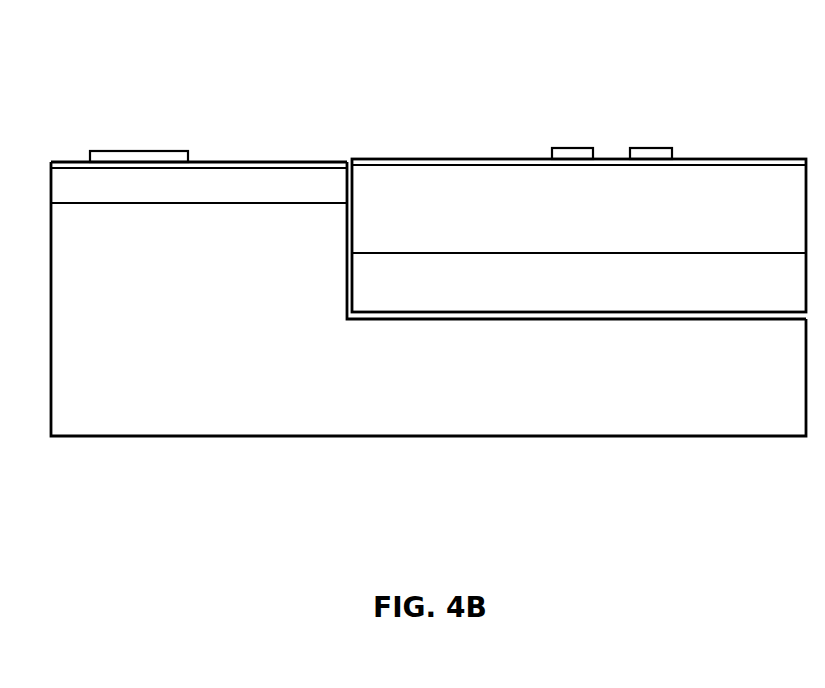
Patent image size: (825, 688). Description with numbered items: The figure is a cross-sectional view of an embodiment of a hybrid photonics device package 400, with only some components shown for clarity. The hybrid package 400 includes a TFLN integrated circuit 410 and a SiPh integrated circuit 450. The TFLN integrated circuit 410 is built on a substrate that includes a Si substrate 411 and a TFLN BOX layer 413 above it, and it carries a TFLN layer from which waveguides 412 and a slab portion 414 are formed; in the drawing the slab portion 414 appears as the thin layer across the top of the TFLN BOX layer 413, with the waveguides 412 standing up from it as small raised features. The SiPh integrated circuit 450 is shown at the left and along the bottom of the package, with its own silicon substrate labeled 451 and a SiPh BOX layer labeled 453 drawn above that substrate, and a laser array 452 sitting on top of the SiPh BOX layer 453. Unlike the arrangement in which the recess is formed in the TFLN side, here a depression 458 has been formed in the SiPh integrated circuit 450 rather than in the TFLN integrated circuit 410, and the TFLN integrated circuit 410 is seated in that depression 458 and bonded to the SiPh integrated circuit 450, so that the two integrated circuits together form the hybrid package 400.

The hybrid photonics device package 400 is at (164, 60).
The TFLN integrated circuit 410 is at (686, 110).
The Si substrate 411 is at (708, 297).
The waveguides 412 is at (582, 132).
The TFLN BOX layer 413 is at (586, 238).
The slab portion 414 is at (705, 159).
The SiPh integrated circuit 450 is at (172, 444).
The Si substrate of SiPh chip 451 is at (220, 389).
The laser array 452 is at (138, 150).
The SiPh BOX layer 453 is at (278, 199).
The depression 458 is at (477, 327).